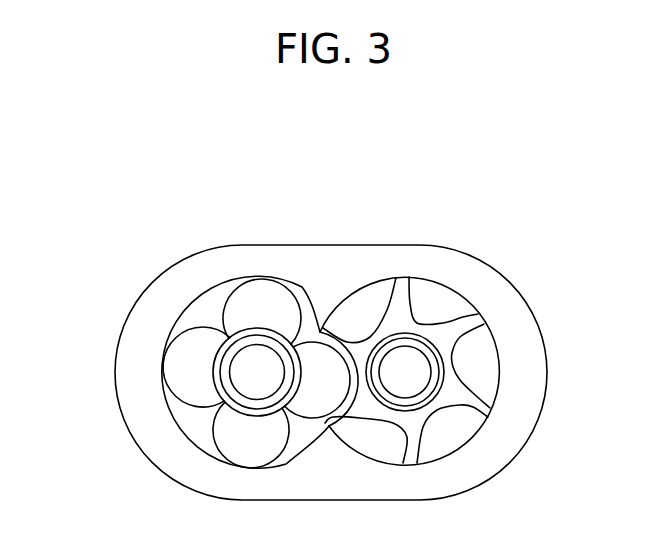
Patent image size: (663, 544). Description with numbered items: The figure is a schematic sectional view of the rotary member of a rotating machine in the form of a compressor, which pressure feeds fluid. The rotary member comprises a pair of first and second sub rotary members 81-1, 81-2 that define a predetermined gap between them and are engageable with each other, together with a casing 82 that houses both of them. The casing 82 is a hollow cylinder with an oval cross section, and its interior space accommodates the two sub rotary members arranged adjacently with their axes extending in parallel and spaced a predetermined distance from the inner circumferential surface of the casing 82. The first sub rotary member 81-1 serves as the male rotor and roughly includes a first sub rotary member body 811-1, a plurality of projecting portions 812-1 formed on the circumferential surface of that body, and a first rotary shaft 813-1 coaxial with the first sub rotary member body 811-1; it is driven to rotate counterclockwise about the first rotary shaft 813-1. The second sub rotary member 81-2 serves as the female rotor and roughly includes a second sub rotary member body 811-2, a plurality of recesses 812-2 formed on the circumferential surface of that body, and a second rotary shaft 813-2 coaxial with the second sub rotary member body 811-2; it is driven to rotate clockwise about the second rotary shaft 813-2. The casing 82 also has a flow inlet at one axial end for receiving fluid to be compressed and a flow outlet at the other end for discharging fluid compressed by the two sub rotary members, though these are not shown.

The casing 82 is at (317, 262).
The first sub rotary member 81-1 is at (191, 322).
The second sub rotary member 81-2 is at (478, 320).
The first sub rotary member body 811-1 is at (257, 373).
The second sub rotary member body 811-2 is at (410, 367).
The projecting portions 812-1 is at (270, 299).
The recesses 812-2 is at (367, 297).
The first rotary shaft 813-1 is at (220, 336).
The second rotary shaft 813-2 is at (412, 370).